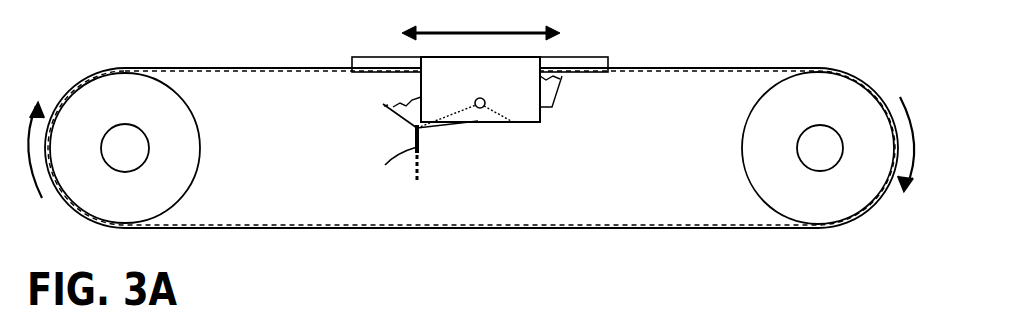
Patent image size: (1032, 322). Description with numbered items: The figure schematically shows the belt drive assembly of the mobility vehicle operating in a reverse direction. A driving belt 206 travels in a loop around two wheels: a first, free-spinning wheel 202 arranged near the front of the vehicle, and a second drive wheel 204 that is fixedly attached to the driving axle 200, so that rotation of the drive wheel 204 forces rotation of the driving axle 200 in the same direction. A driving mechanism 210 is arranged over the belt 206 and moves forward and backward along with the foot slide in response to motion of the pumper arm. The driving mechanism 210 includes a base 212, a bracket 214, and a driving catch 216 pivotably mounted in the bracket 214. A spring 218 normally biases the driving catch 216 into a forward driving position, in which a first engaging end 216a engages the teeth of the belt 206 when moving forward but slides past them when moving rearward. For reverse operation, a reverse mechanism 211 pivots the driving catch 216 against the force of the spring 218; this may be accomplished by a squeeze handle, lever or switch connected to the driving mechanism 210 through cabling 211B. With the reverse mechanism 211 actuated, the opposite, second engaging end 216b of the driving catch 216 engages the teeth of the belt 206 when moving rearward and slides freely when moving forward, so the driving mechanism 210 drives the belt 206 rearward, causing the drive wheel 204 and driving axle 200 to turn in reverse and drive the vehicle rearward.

The driving axle 200 is at (832, 124).
The first wheel 202 is at (200, 147).
The drive wheel 204 is at (740, 170).
The driving belt 206 is at (672, 68).
The driving mechanism 210 is at (556, 118).
The reverse mechanism 211 is at (424, 148).
The cabling 211B is at (417, 170).
The base 212 is at (360, 57).
The bracket 214 is at (421, 78).
The driving catch 216 is at (415, 135).
The first engaging end 216a is at (385, 105).
The second engaging end 216b is at (564, 74).
The spring 218 is at (467, 110).